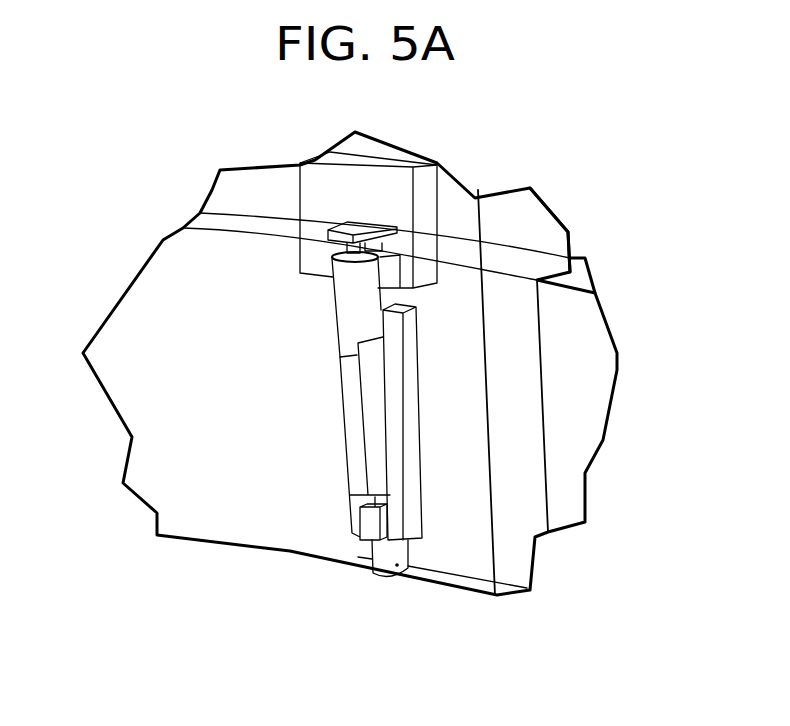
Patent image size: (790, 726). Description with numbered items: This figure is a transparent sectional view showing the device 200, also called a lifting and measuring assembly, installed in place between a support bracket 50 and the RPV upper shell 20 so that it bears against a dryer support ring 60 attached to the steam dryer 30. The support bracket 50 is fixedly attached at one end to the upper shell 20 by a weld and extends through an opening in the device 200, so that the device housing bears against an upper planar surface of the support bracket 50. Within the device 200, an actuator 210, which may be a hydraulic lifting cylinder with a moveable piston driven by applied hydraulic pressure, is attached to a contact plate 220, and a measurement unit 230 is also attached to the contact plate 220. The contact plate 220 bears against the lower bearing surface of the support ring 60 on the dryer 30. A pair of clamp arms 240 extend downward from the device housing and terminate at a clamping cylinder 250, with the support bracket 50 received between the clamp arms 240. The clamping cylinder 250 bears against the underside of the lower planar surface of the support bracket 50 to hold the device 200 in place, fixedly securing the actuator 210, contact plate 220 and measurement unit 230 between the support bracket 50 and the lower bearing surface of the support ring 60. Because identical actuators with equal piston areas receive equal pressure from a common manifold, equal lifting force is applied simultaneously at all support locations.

The RPV upper shell 20 is at (615, 367).
The steam dryer 30 is at (552, 208).
The support bracket 50 is at (357, 412).
The dryer support ring 60 is at (290, 185).
The device 200 is at (222, 326).
The actuator 210 is at (340, 248).
The contact plate 220 is at (328, 241).
The measurement unit 230 is at (387, 243).
The clamp arms 240 is at (422, 437).
The clamping cylinder 250 is at (397, 577).